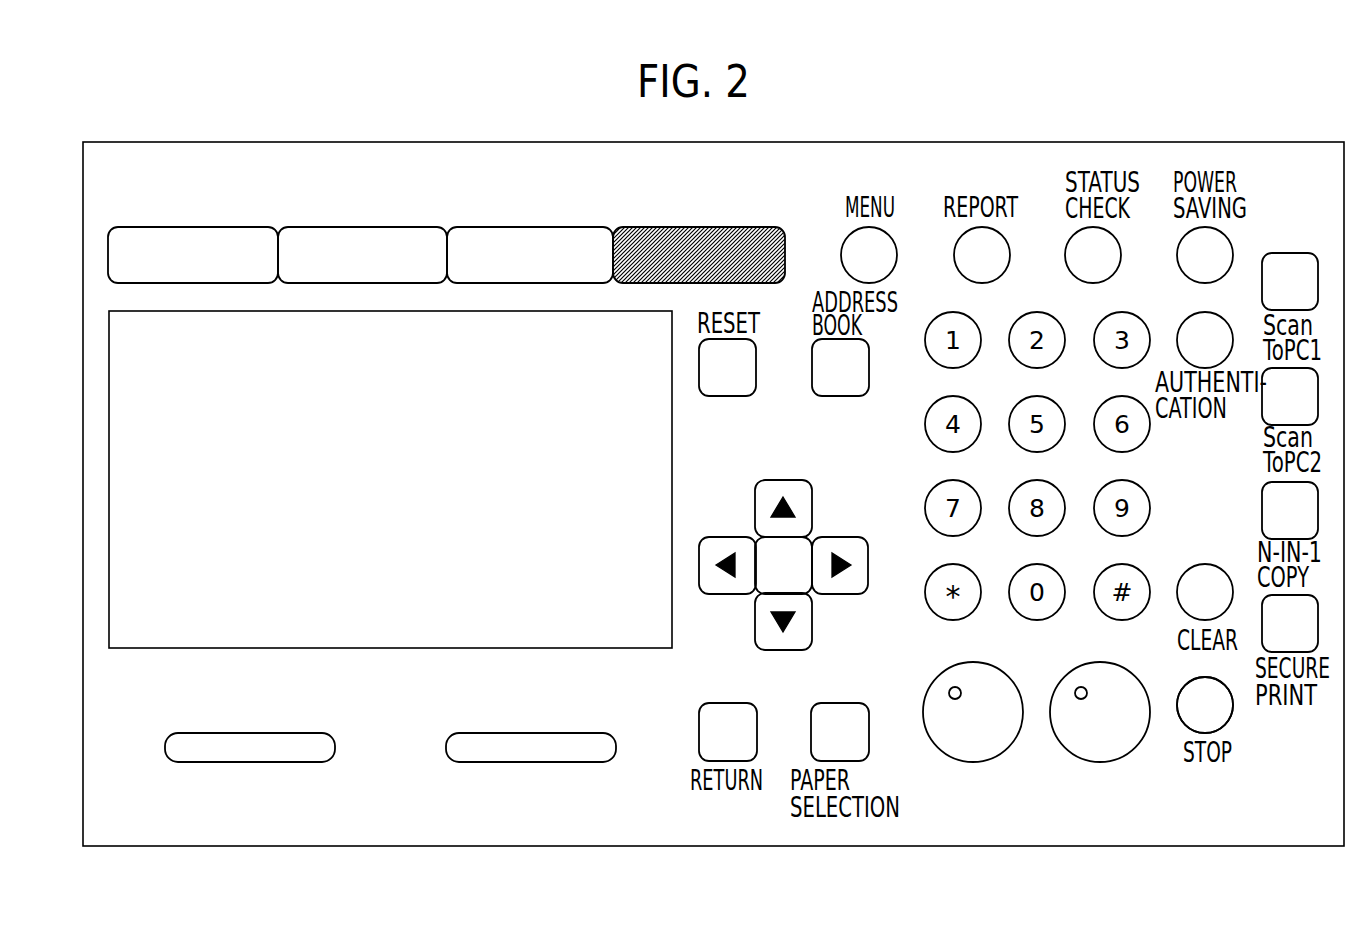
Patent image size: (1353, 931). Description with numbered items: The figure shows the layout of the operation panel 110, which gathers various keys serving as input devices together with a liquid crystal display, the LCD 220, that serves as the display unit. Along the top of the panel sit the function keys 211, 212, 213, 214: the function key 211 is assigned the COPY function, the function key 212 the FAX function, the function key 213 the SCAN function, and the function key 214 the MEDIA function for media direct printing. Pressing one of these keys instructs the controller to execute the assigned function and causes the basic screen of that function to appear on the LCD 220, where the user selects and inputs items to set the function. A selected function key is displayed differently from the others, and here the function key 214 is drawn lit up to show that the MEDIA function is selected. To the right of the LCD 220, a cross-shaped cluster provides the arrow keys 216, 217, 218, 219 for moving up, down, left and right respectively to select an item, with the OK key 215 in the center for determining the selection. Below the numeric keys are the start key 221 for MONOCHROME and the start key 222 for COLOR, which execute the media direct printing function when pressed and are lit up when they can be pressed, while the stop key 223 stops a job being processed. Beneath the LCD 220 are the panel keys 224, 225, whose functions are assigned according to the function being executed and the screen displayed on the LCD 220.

The operation panel 110 is at (1048, 142).
The function key 211 is at (198, 226).
The function key 212 is at (368, 226).
The function key 213 is at (533, 226).
The function key 214 is at (710, 226).
The OK key 215 is at (770, 582).
The arrow key 216 is at (783, 480).
The arrow key 217 is at (812, 620).
The arrow key 218 is at (727, 537).
The arrow key 219 is at (841, 537).
The liquid crystal display 220 is at (135, 649).
The start key 221 is at (937, 678).
The start key 222 is at (1057, 678).
The stop key 223 is at (1229, 718).
The panel key 224 is at (317, 732).
The panel key 225 is at (596, 732).